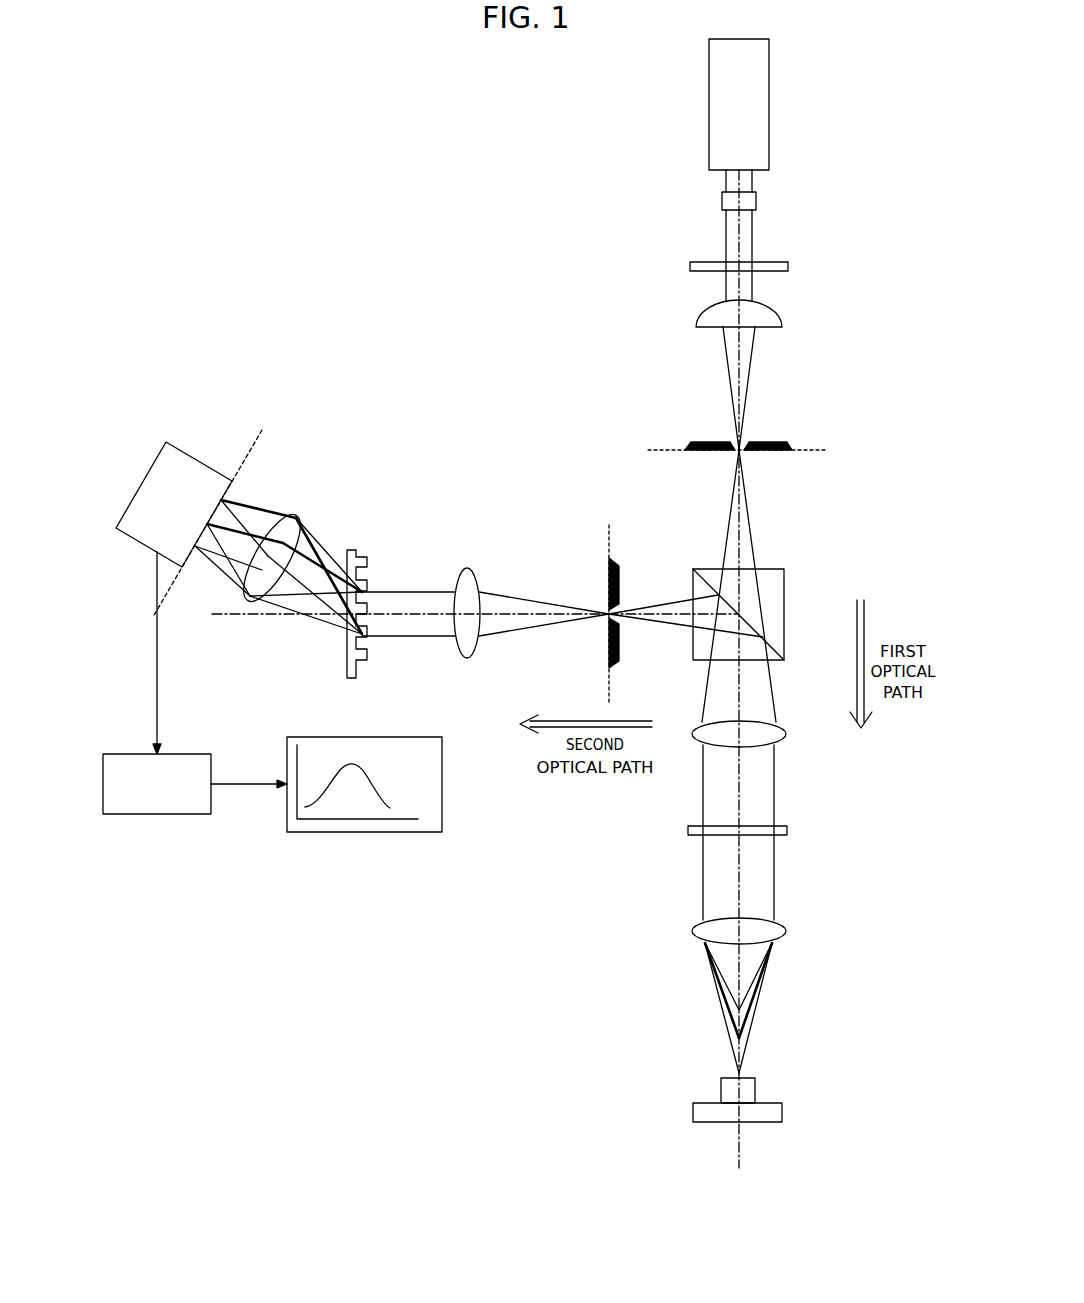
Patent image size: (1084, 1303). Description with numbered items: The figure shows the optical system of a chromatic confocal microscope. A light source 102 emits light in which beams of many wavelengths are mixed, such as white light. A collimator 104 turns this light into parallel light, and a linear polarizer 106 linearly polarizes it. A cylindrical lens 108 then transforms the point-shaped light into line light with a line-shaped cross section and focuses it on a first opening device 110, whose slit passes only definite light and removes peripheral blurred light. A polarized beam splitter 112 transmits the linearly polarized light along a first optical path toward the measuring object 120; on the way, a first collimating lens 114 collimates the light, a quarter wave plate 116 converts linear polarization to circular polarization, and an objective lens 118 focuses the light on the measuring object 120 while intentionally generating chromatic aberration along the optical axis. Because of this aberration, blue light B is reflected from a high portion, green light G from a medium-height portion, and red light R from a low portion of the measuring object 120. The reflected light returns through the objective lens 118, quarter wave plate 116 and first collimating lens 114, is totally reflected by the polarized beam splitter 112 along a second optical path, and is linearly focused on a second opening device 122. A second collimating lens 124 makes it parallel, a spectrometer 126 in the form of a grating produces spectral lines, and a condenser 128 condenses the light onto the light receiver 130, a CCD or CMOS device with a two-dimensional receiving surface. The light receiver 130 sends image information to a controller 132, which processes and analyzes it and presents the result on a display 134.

The light source 102 is at (769, 101).
The collimator 104 is at (756, 199).
The linear polarizer 106 is at (788, 266).
The cylindrical lens 108 is at (782, 319).
The first opening device 110 is at (771, 442).
The polarized beam splitter 112 is at (784, 613).
The first collimating lens 114 is at (786, 735).
The quarter wave plate 116 is at (787, 830).
The objective lens 118 is at (786, 932).
The measuring object 120 is at (782, 1110).
The second opening device 122 is at (619, 655).
The second collimating lens 124 is at (467, 658).
The spectrometer 126 is at (350, 678).
The condenser 128 is at (295, 516).
The light receiver 130 is at (201, 462).
The controller 132 is at (155, 814).
The display 134 is at (363, 832).
The blue light B is at (748, 982).
The green light G is at (752, 1007).
The red light R is at (748, 1038).